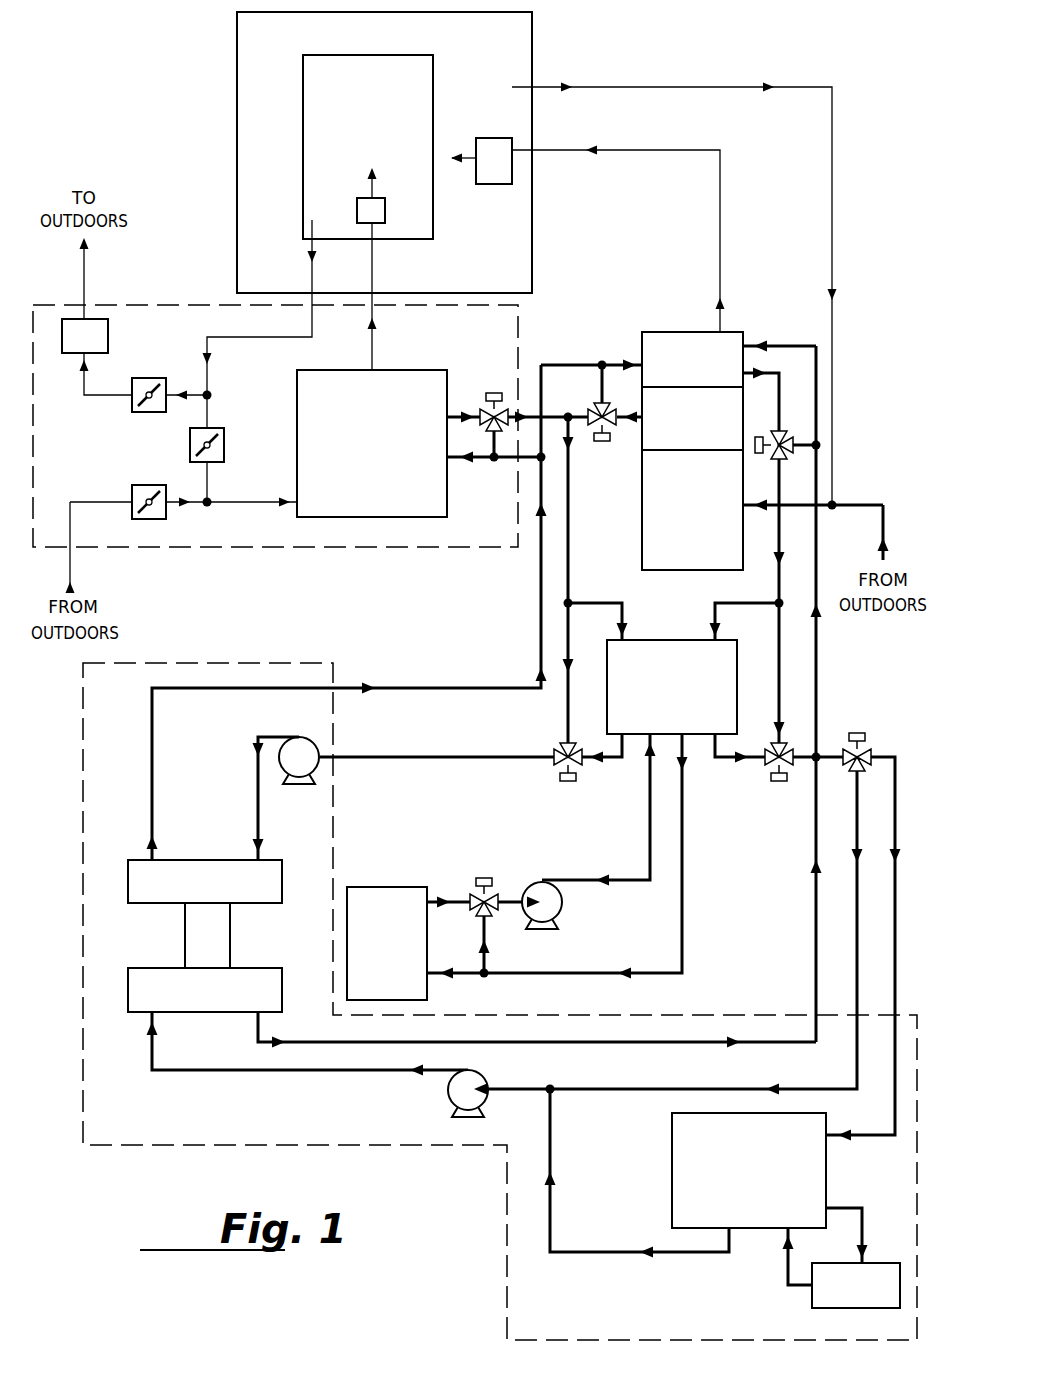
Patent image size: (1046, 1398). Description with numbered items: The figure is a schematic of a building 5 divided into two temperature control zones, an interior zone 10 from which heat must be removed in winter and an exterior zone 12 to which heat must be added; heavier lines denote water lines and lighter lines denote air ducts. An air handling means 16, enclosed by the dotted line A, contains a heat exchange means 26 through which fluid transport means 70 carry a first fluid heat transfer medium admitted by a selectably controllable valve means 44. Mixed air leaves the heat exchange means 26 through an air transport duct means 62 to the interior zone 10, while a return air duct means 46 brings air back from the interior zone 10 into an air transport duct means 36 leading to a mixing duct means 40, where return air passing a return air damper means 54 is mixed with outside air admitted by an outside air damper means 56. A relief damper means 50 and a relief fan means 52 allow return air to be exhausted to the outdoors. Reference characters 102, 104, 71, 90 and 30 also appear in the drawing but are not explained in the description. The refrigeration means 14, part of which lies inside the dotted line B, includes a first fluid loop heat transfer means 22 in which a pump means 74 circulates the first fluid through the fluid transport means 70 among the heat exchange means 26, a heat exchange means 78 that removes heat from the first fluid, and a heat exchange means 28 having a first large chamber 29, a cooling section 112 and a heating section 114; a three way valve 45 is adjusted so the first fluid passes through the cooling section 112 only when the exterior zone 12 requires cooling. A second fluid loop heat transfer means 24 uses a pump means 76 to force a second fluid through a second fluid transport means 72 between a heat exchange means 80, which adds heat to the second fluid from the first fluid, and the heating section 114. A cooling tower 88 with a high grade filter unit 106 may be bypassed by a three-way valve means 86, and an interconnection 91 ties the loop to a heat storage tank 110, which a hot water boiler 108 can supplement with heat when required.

The building 5 is at (226, 90).
The interior zone 10 is at (357, 117).
The exterior zone 12 is at (447, 270).
The supply air outlet 102 is at (377, 212).
The return air inlet 104 is at (493, 184).
The relief fan means 52 is at (97, 335).
The relief damper means 50 is at (146, 380).
The air transport duct means 36 is at (216, 352).
The return air duct means 46 is at (312, 326).
The air transport duct means 62 is at (373, 345).
The return air damper means 54 is at (225, 440).
The outside air damper means 56 is at (146, 485).
The mixing duct means 40 is at (236, 503).
The air handling means 16 is at (199, 524).
The heat exchange means 26 is at (361, 449).
The valve means 44 is at (497, 392).
The fluid transport means 70 is at (462, 410).
The three way valve 45 is at (608, 447).
The heating section 114 is at (676, 386).
The cooling section 112 is at (676, 448).
The first large chamber 29 is at (683, 527).
The heat exchange means 28 is at (639, 513).
The refrigeration means 14 is at (529, 637).
The interconnection 91 is at (712, 614).
The heat storage tank 110 is at (656, 694).
The pump means 74 is at (302, 745).
The water line 71 is at (371, 755).
The first fluid loop heat transfer means 22 is at (490, 767).
The three-way valve means 86 is at (865, 748).
The heat exchange means 78 is at (205, 870).
The thermal storage 30 is at (170, 905).
The heat exchange means 80 is at (251, 988).
The hot water boiler 108 is at (367, 954).
The water line 90 is at (789, 877).
The second fluid loop heat transfer means 24 is at (320, 1040).
The second fluid transport means 72 is at (358, 1073).
The pump means 76 is at (480, 1082).
The cooling tower 88 is at (732, 1180).
The high grade filter unit 106 is at (822, 1295).
The dotted line A is at (240, 550).
The dotted line B is at (397, 1150).